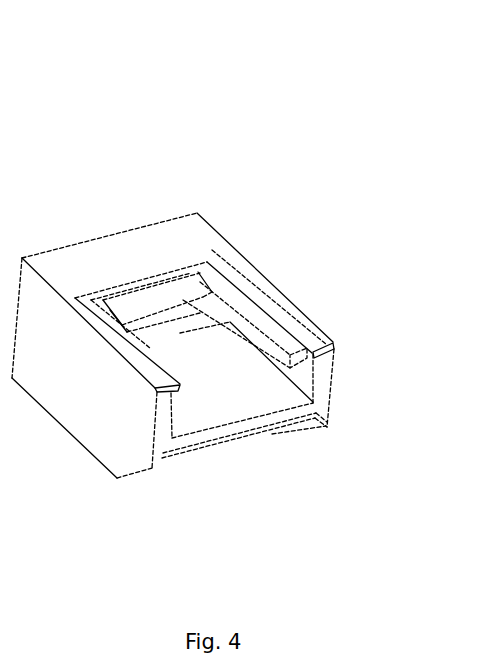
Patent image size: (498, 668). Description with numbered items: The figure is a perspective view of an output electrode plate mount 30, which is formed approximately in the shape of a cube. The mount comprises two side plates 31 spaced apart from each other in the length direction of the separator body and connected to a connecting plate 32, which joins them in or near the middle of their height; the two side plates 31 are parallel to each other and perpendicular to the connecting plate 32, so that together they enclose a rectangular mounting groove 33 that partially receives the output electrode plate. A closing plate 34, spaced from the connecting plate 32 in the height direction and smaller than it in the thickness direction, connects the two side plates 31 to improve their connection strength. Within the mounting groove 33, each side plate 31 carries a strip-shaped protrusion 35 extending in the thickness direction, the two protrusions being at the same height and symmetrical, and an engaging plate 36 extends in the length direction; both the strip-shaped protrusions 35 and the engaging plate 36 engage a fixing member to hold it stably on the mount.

The output electrode plate mount 30 is at (130, 44).
The side plates 31 is at (154, 470).
The connecting plate 32 is at (260, 423).
The mounting groove 33 is at (262, 307).
The closing plate 34 is at (102, 249).
The strip-shaped protrusion 35 is at (174, 396).
The engaging plate 36 is at (213, 308).